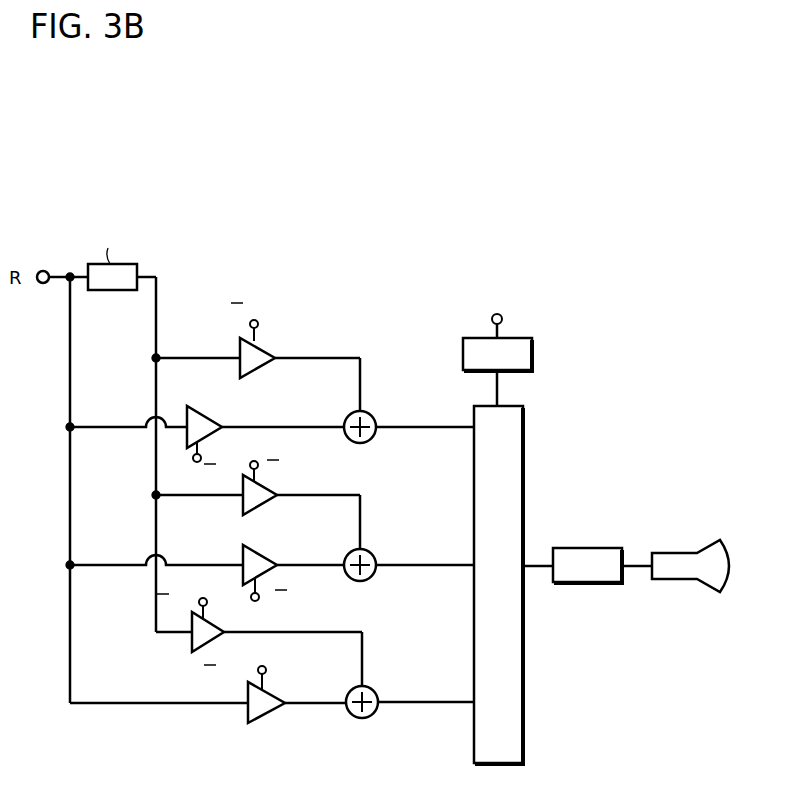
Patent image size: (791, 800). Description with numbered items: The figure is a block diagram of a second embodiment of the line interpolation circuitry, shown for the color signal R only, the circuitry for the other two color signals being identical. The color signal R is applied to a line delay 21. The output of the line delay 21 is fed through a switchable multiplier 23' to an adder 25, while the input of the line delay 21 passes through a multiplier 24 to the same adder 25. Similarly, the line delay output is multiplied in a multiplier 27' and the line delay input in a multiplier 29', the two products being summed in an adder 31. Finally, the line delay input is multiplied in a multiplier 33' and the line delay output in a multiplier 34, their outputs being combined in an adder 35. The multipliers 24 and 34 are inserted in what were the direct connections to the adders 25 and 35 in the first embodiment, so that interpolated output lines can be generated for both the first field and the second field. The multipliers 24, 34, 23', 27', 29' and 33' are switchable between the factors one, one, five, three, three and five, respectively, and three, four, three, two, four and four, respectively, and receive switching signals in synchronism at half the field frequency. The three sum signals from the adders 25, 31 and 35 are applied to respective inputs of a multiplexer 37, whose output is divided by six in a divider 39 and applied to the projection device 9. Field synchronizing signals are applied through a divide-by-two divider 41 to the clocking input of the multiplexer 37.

The line delay 21 is at (128, 289).
The multiplier 23' is at (265, 332).
The multiplier 24 is at (234, 399).
The adder 25 is at (372, 413).
The multiplier 27' is at (271, 486).
The multiplier 29' is at (253, 570).
The adder 31 is at (373, 552).
The multiplier 33' is at (280, 694).
The multiplier 34 is at (191, 642).
The adder 35 is at (372, 688).
The multiplexer 37 is at (526, 437).
The divider 39 is at (609, 550).
The divide-by-2 divider 41 is at (535, 352).
The projection device 9 is at (680, 560).